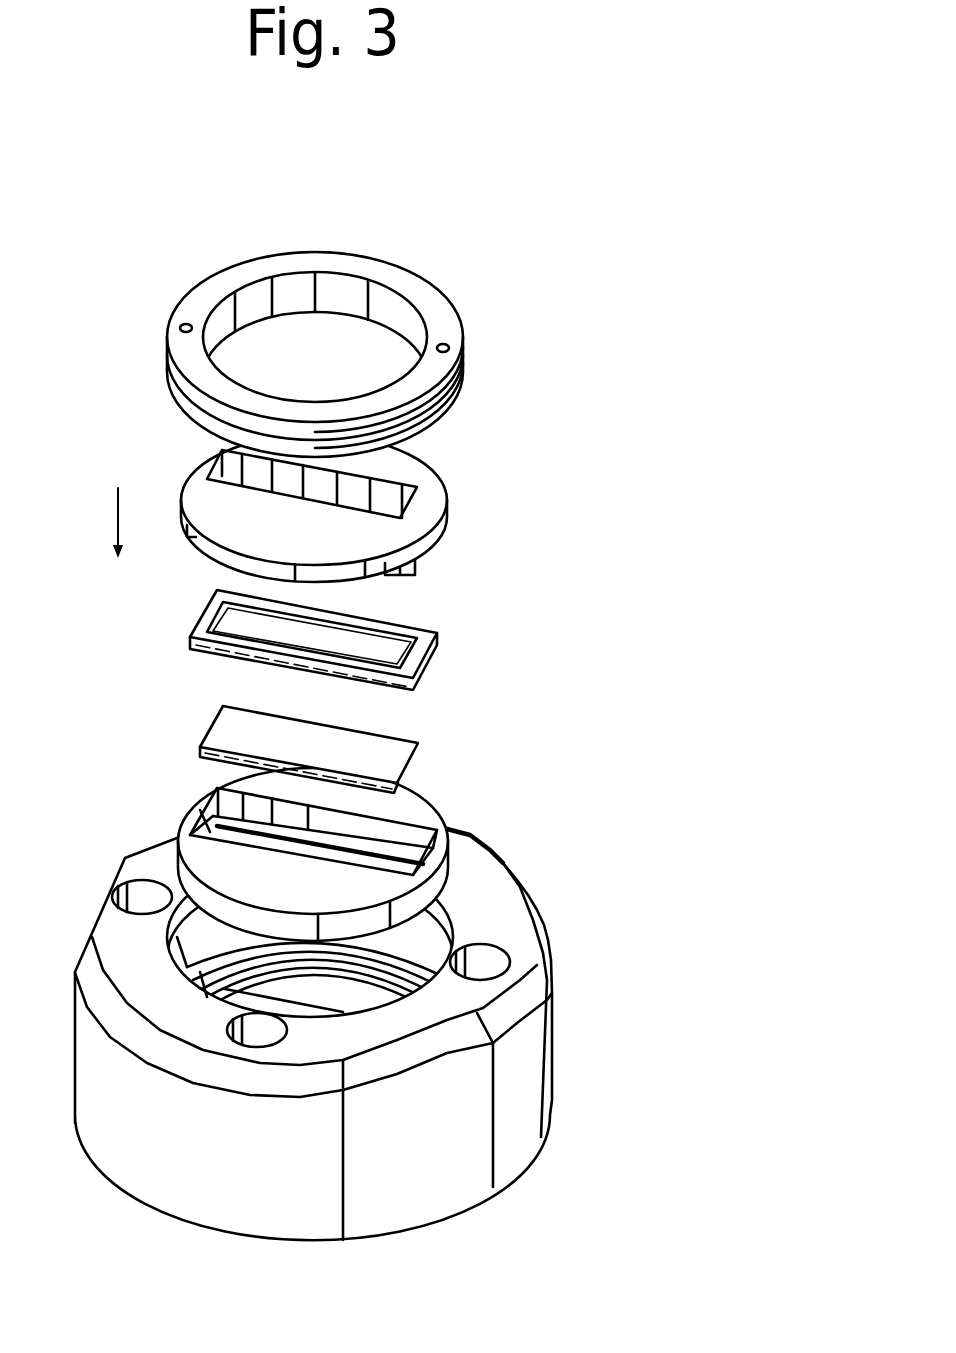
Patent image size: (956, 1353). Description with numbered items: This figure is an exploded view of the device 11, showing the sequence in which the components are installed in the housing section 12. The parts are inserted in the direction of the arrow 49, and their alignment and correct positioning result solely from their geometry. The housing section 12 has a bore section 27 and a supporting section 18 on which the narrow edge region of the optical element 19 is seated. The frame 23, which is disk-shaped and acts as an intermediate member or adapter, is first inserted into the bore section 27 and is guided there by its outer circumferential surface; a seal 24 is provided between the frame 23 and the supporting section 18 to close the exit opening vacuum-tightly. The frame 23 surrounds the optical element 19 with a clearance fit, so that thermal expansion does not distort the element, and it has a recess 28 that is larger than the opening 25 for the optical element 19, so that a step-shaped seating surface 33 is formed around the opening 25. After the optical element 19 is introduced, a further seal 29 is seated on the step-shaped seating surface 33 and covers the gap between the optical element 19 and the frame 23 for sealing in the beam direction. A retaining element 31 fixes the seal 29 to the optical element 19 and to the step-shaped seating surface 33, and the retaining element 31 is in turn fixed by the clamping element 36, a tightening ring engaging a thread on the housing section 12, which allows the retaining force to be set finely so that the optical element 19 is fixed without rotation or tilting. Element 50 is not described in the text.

The device 11 is at (633, 850).
The housing section 12 is at (515, 1115).
The supporting section 18 is at (357, 997).
The optical element 19 is at (440, 726).
The frame 23 is at (456, 785).
The seal 24 is at (415, 930).
The opening 25 is at (392, 858).
The bore section 27 is at (415, 897).
The recess 28 is at (372, 833).
The seal 29 is at (463, 645).
The retaining element 31 is at (482, 486).
The step-shaped seating surface 33 is at (213, 828).
The clamping element 36 is at (487, 350).
The arrow 49 is at (95, 522).
The locating tabs 50 is at (413, 577).